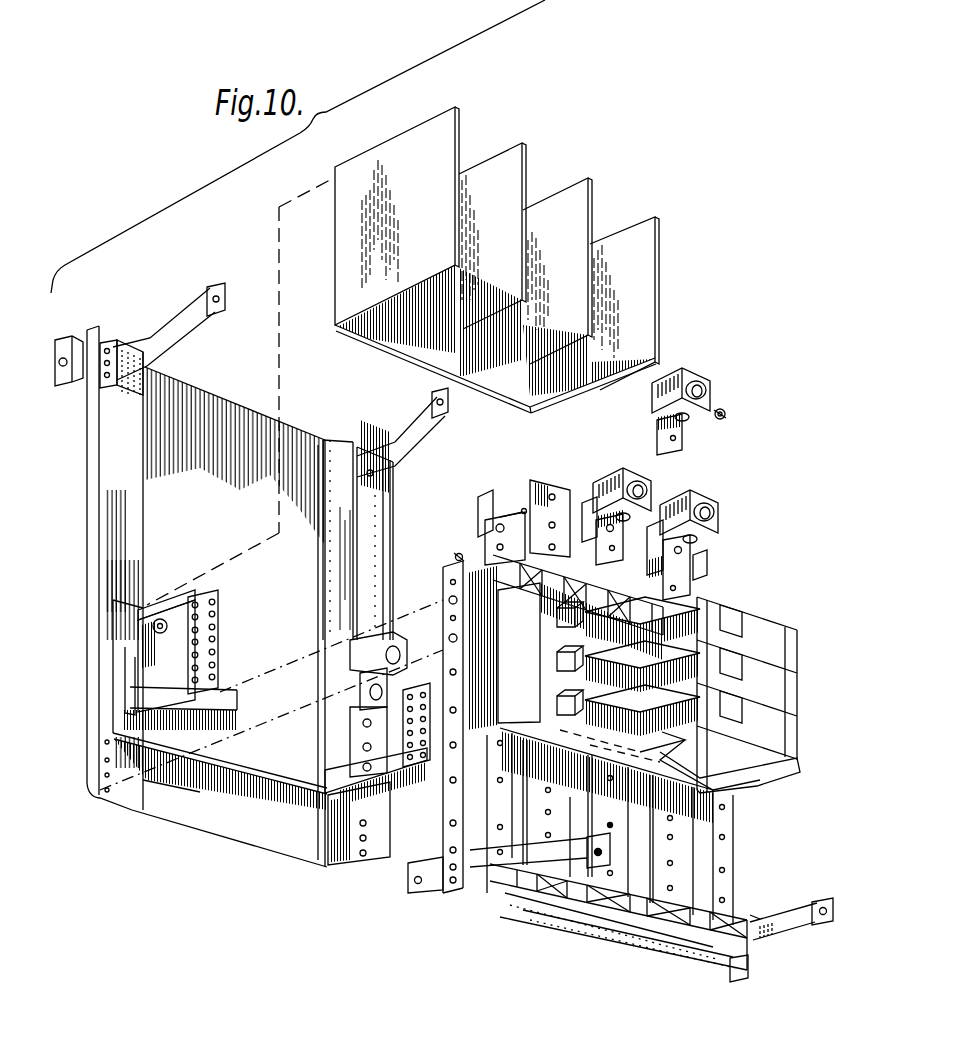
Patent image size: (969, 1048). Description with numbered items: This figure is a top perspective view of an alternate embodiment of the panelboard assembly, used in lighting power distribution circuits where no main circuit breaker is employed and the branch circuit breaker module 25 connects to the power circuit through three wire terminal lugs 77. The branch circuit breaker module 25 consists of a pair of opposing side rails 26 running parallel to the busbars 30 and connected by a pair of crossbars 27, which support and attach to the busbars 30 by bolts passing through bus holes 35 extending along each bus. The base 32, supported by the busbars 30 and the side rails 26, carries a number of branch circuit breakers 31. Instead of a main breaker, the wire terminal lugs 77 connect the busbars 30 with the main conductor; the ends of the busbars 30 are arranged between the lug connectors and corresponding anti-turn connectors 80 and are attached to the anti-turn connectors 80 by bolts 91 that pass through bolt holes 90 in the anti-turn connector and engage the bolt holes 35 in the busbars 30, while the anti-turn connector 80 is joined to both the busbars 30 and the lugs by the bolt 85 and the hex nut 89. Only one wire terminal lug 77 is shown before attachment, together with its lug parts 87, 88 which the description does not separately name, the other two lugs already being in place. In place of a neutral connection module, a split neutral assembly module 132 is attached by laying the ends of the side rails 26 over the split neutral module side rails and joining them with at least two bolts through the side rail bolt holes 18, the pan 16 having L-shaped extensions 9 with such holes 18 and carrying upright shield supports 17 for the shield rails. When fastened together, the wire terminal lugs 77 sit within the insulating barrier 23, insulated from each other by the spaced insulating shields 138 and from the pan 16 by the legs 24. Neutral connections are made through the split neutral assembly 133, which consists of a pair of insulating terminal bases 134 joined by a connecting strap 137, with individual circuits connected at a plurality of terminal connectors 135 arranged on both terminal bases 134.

The L-shaped extensions 9 is at (146, 390).
The pan 16 is at (206, 514).
The shield supports 17 is at (190, 316).
The holes 18 is at (100, 757).
The insulating barrier 23 is at (365, 145).
The legs 24 is at (398, 352).
The branch circuit breaker module 25 is at (588, 990).
The side rails 26 is at (475, 840).
The crossbars 27 is at (748, 907).
The busbars 30 is at (537, 481).
The branch circuit breakers 31 is at (698, 643).
The base 32 is at (725, 790).
The bus holes 35 is at (677, 588).
The wire terminal lugs 77 is at (712, 381).
The anti-turn connectors 80 is at (479, 494).
The bolt 85 is at (512, 512).
The hole 87 is at (680, 437).
The mounting plate 88 is at (681, 448).
The hex nut 89 is at (727, 414).
The bolt holes 90 is at (496, 530).
The bolts 91 is at (457, 552).
The split neutral assembly module 132 is at (250, 904).
The split neutral assembly 133 is at (245, 762).
The insulating terminal bases 134 is at (123, 627).
The terminal connectors 135 is at (222, 606).
The connecting strap 137 is at (280, 760).
The insulating shields 138 is at (459, 125).